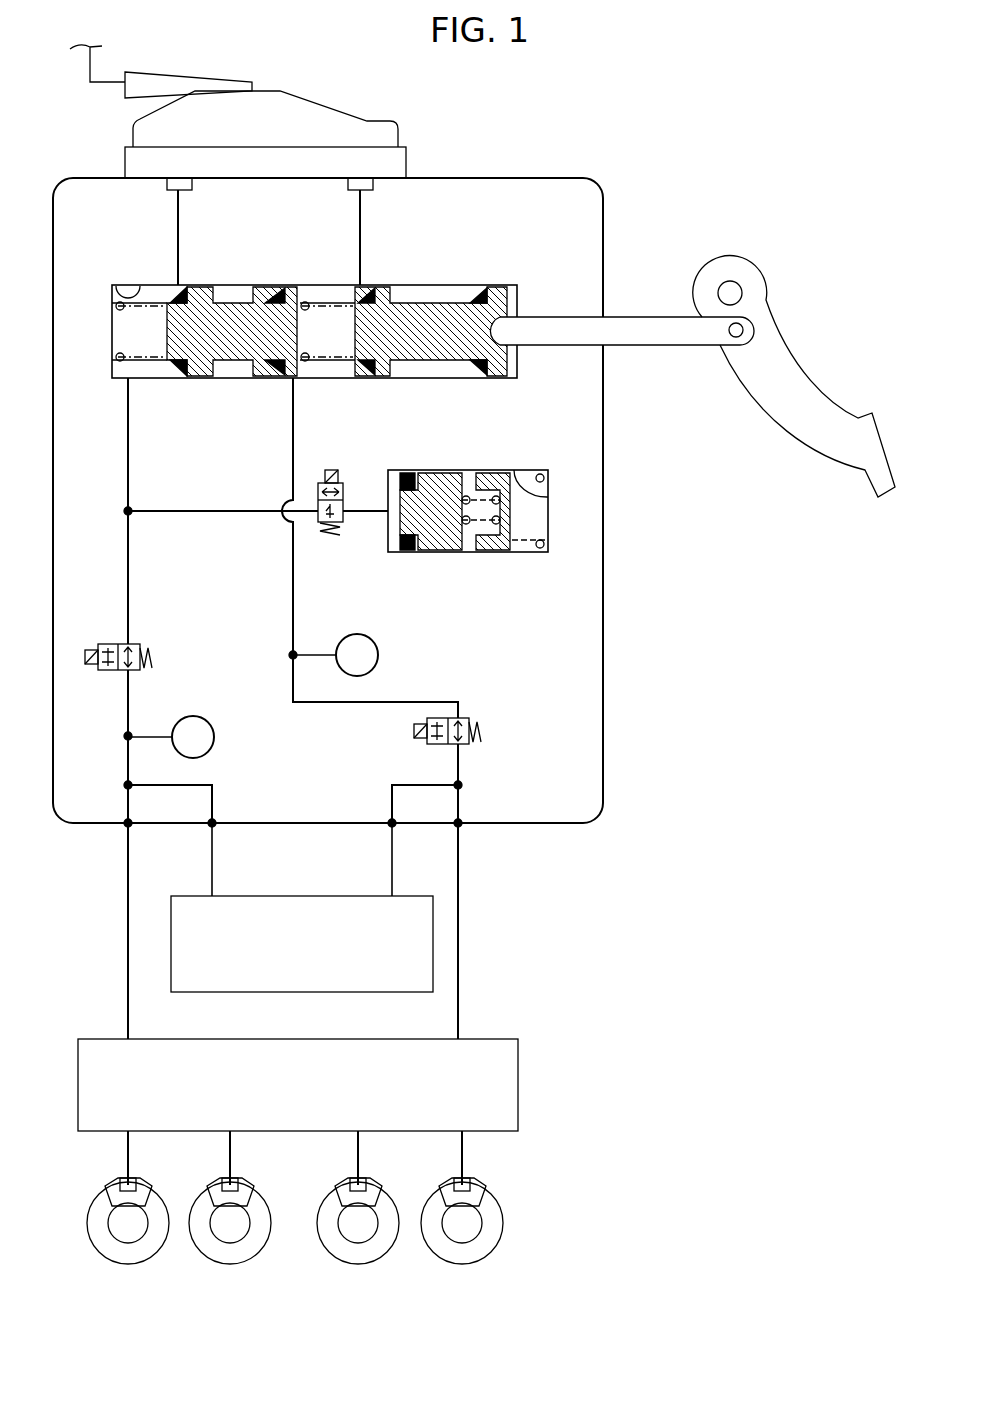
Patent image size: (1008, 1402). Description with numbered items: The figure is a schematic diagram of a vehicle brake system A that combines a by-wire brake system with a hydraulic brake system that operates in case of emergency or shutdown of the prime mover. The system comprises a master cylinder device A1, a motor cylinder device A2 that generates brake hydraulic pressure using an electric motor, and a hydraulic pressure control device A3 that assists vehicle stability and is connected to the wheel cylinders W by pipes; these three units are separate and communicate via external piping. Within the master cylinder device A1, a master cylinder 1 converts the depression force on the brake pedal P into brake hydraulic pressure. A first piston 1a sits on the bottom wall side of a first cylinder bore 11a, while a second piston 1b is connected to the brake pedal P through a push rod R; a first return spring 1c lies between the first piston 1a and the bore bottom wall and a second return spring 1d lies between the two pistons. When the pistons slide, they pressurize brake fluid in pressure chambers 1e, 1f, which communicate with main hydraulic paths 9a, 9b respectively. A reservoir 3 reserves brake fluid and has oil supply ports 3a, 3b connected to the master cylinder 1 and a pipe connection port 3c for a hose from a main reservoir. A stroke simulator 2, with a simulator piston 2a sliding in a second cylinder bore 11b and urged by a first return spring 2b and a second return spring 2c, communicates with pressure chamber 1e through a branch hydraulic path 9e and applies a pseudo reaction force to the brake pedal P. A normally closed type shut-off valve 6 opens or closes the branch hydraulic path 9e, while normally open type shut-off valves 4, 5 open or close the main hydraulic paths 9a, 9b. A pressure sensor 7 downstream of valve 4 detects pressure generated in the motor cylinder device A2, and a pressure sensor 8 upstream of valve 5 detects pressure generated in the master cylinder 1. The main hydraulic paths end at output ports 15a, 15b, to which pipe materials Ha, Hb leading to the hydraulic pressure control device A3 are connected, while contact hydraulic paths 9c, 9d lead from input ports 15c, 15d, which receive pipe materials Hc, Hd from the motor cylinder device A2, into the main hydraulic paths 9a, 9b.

The vehicle brake system A is at (512, 157).
The master cylinder device A1 is at (605, 718).
The motor cylinder device A2 is at (318, 957).
The hydraulic pressure control device A3 is at (318, 1097).
The master cylinder 1 is at (288, 324).
The first piston 1a is at (237, 332).
The second piston 1b is at (428, 332).
The first return spring 1c is at (158, 362).
The second return spring 1d is at (338, 362).
The pressure chamber 1e is at (150, 344).
The pressure chamber 1f is at (330, 344).
The stroke simulator 2 is at (498, 510).
The simulator piston 2a is at (433, 532).
The first return spring 2b is at (473, 548).
The second return spring 2c is at (523, 541).
The reservoir 3 is at (312, 92).
The oil supply port 3a is at (175, 195).
The oil supply port 3b is at (355, 193).
The pipe connection port 3c is at (162, 72).
The normally open type shut-off valve 4 is at (138, 676).
The normally open type shut-off valve 5 is at (471, 744).
The normally closed type shut-off valve 6 is at (320, 525).
The pressure sensor 7 is at (171, 737).
The pressure sensor 8 is at (335, 655).
The main hydraulic path 9a is at (130, 573).
The main hydraulic path 9b is at (291, 598).
The contact hydraulic path 9c is at (195, 783).
The contact hydraulic path 9d is at (413, 782).
The branch hydraulic path 9e is at (247, 514).
The first cylinder bore 11a is at (118, 291).
The second cylinder bore 11b is at (548, 490).
The output port 15a is at (123, 818).
The output port 15b is at (463, 818).
The input port 15c is at (218, 818).
The input port 15d is at (388, 818).
The pipe material Ha is at (124, 866).
The pipe material Hb is at (462, 866).
The pipe material Hc is at (216, 866).
The pipe material Hd is at (390, 866).
The brake pedal P is at (867, 484).
The push rod R is at (652, 317).
The wheel cylinder W is at (135, 1180).